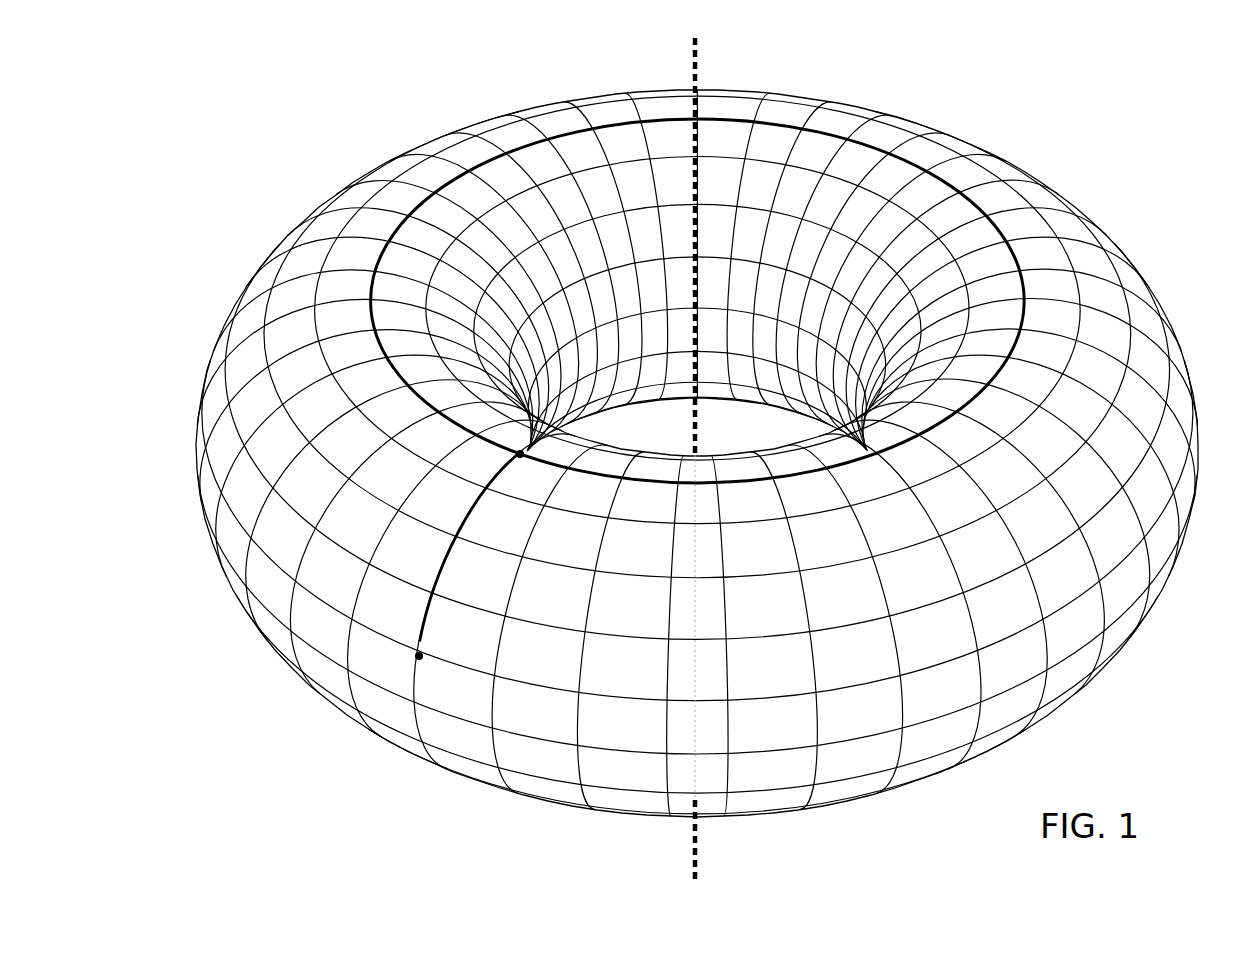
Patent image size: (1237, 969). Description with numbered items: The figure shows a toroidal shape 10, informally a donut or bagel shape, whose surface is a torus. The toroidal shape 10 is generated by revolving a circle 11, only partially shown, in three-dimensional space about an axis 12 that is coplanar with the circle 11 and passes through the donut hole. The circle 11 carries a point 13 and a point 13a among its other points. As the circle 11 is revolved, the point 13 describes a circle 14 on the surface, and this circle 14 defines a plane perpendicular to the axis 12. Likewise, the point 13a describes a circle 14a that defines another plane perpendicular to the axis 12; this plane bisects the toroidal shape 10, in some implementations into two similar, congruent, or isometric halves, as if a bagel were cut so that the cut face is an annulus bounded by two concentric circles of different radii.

The toroidal shape 10 is at (266, 811).
The circle 11 is at (416, 768).
The axis 12 is at (689, 62).
The point 13 is at (545, 449).
The point 13a is at (417, 651).
The circle 14 is at (876, 135).
The circle 14a is at (630, 695).